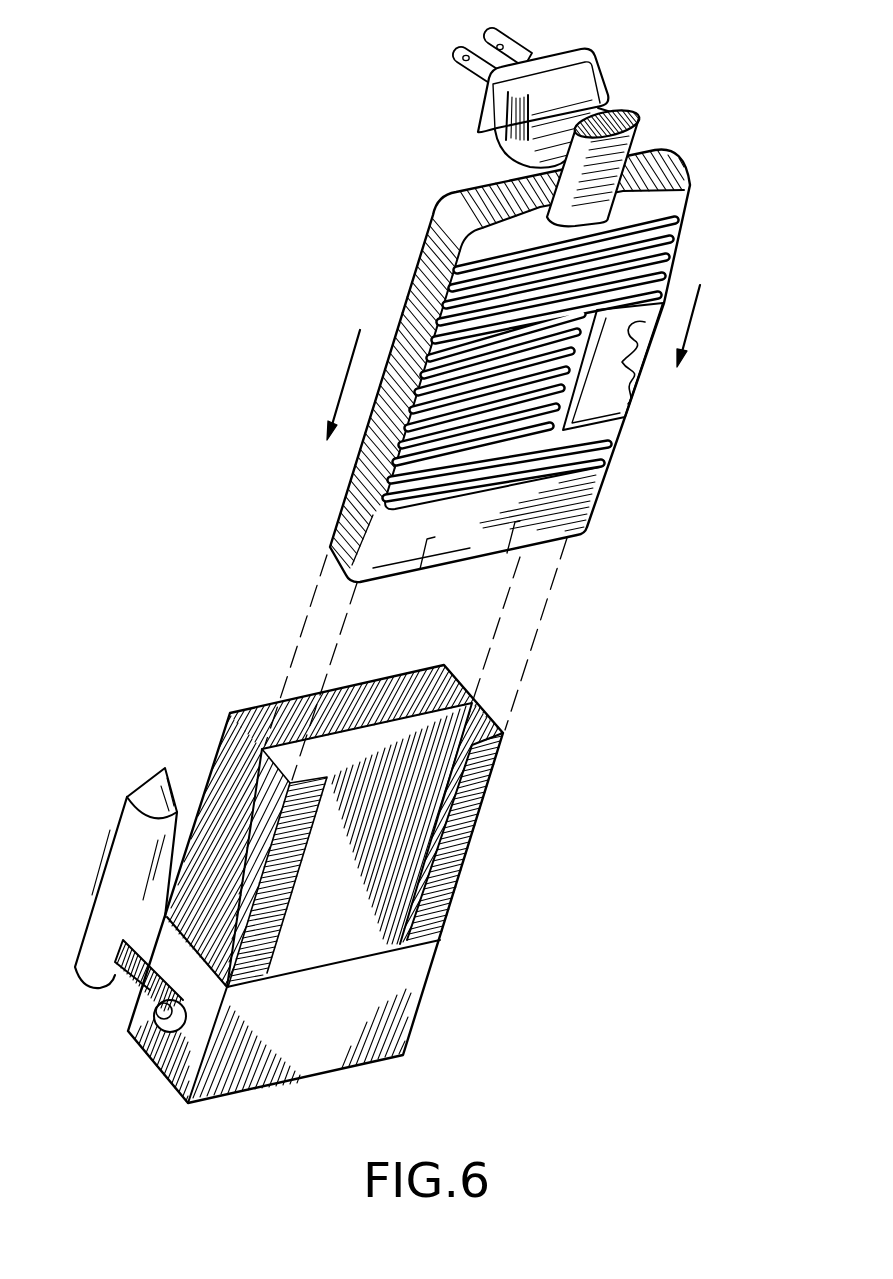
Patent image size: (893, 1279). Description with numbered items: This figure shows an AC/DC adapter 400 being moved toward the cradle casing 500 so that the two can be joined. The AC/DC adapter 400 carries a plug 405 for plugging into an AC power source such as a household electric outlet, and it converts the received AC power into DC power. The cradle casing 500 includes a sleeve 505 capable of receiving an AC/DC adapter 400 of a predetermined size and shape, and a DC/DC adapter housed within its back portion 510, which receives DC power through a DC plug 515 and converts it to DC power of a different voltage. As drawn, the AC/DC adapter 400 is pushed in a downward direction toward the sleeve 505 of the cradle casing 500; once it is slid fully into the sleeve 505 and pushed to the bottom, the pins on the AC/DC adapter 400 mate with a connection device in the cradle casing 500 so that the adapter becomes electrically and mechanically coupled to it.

The AC/DC adapter 400 is at (683, 167).
The plug 405 is at (593, 80).
The cradle casing 500 is at (362, 858).
The sleeve 505 is at (470, 802).
The back portion 510 is at (382, 693).
The DC plug 515 is at (117, 832).